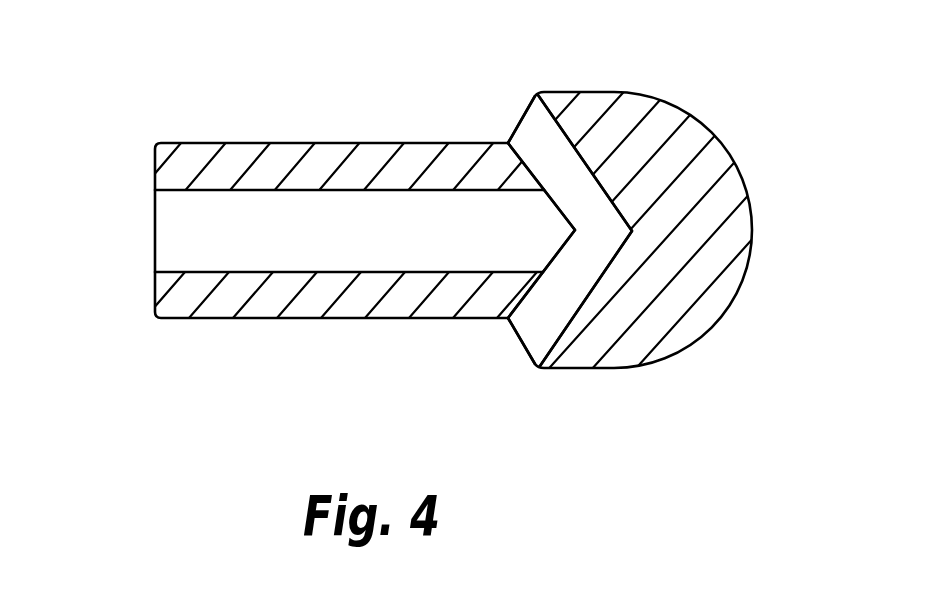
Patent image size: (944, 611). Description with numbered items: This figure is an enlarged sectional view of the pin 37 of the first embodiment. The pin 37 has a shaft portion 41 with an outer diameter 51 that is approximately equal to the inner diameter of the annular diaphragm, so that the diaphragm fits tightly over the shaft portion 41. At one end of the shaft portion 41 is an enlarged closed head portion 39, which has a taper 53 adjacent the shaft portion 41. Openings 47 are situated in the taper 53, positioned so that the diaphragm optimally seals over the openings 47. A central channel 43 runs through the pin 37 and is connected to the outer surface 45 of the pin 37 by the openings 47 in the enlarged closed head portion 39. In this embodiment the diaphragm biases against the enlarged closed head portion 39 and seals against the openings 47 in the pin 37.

The pin 37 is at (797, 87).
The enlarged closed head portion 39 is at (682, 252).
The shaft portion 41 is at (152, 122).
The central channel 43 is at (372, 243).
The outer surface 45 is at (522, 126).
The openings 47 is at (560, 285).
The outer diameter 51 is at (140, 145).
The taper 53 is at (517, 337).